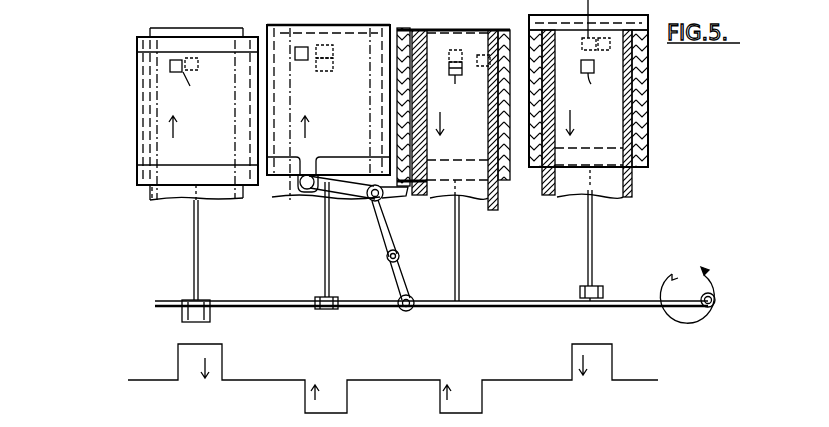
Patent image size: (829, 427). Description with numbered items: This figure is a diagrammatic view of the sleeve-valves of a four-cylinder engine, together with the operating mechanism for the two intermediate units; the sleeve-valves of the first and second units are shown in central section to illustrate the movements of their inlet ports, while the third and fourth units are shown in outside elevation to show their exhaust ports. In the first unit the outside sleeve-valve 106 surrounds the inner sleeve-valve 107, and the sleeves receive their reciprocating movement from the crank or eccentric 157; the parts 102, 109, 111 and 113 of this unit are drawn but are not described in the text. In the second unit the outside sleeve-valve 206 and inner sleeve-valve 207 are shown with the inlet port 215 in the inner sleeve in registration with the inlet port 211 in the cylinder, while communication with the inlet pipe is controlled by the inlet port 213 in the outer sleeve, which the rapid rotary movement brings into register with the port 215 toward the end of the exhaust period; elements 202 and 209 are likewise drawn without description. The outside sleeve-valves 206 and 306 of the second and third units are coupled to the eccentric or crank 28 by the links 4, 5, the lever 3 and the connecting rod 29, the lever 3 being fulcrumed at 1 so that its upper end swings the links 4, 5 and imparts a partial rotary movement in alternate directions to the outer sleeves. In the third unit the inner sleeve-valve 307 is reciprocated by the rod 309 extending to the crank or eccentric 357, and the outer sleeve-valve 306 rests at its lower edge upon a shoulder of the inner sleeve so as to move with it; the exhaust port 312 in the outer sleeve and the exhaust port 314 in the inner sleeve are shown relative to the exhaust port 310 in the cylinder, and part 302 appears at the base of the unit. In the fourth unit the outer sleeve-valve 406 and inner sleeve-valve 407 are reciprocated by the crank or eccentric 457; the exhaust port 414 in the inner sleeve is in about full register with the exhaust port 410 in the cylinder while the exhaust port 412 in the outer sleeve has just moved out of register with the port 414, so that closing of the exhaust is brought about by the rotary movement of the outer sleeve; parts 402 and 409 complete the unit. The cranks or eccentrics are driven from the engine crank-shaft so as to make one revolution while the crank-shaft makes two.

The fulcrum 1 is at (400, 255).
The lever 3 is at (379, 229).
The link 4 is at (396, 197).
The link 5 is at (340, 192).
The eccentric or crank 28 is at (698, 324).
The connecting rod 29 is at (553, 303).
The inner wall 102 is at (632, 184).
The outside sleeve-valve 106 is at (648, 62).
The inner sleeve-valve 107 is at (636, 100).
The supply pipe 109 is at (594, 226).
The burner 111 is at (595, 81).
The inlet 113 is at (598, 38).
The crank or eccentric 157 is at (603, 288).
The wall 202 is at (499, 198).
The outside sleeve-valve 206 is at (399, 42).
The inner sleeve-valve 207 is at (453, 101).
The supply pipe 209 is at (461, 246).
The inlet port in the cylinder 211 is at (457, 86).
The inlet port in the outer sleeve-valve 213 is at (483, 55).
The inlet port in the inner sleeve-valve 215 is at (455, 50).
The hinge bracket 302 is at (290, 200).
The outer sleeve-valve 306 is at (267, 45).
The inner sleeve-valve 307 is at (278, 28).
The rod 309 is at (325, 243).
The exhaust port in the cylinder 310 is at (322, 71).
The exhaust port in the outer sleeve-valve 312 is at (306, 47).
The exhaust port in the inner sleeve-valve 314 is at (333, 52).
The crank or eccentric 357 is at (323, 310).
The bottom panel 402 is at (152, 200).
The outer sleeve-valve 406 is at (137, 105).
The inner sleeve-valve 407 is at (148, 152).
The supply pipe 409 is at (194, 266).
The exhaust port in the cylinder 410 is at (199, 89).
The exhaust port in the outer sleeve-valve 412 is at (170, 67).
The exhaust port in the inner sleeve-valve 414 is at (198, 64).
The crank or eccentric 457 is at (182, 313).